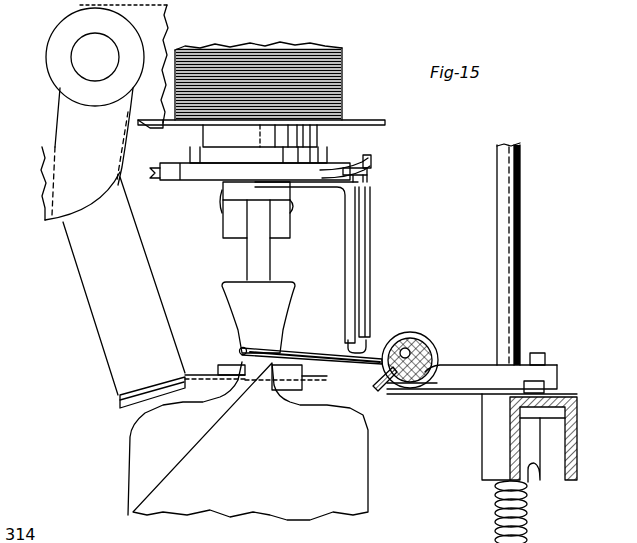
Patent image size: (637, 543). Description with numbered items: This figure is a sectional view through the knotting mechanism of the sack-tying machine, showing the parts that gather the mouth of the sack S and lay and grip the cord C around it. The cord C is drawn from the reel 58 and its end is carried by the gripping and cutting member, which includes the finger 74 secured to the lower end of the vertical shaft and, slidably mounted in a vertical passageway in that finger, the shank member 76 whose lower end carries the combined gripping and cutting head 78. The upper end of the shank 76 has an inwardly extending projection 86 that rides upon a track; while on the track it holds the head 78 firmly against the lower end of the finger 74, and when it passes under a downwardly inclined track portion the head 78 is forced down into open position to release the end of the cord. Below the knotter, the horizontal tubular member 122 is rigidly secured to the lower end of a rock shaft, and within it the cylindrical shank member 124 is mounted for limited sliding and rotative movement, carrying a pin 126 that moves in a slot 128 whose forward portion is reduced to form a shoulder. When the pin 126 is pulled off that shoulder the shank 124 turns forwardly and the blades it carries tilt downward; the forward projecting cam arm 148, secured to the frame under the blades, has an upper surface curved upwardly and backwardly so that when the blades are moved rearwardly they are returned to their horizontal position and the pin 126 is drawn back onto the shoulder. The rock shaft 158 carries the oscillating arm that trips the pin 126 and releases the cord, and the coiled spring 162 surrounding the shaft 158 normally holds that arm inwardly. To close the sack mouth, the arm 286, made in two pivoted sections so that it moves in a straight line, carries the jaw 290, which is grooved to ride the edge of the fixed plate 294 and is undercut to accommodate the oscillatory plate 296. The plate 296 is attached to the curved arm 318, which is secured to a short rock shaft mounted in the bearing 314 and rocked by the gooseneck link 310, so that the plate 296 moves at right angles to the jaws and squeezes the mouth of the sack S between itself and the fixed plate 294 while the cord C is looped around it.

The reel 58 is at (385, 123).
The finger 74 is at (363, 247).
The shank member 76 is at (368, 181).
The combined gripping and cutting head 78 is at (343, 152).
The inwardly extending projection 86 is at (365, 166).
The horizontal tubular member 122 is at (422, 377).
The cylindrical shank member 124 is at (430, 357).
The pin 126 is at (393, 337).
The slot 128 is at (403, 337).
The cam arm 148 is at (463, 365).
The rock shaft 158 is at (515, 285).
The coiled spring 162 is at (528, 527).
The arm 286 is at (260, 257).
The jaw 290 is at (228, 367).
The fixed plate 294 is at (318, 380).
The plate 296 is at (212, 380).
The gooseneck link 310 is at (82, 135).
The bearing 314 is at (157, 28).
The curved arm 318 is at (118, 343).
The cord C is at (330, 350).
The sack S is at (153, 458).